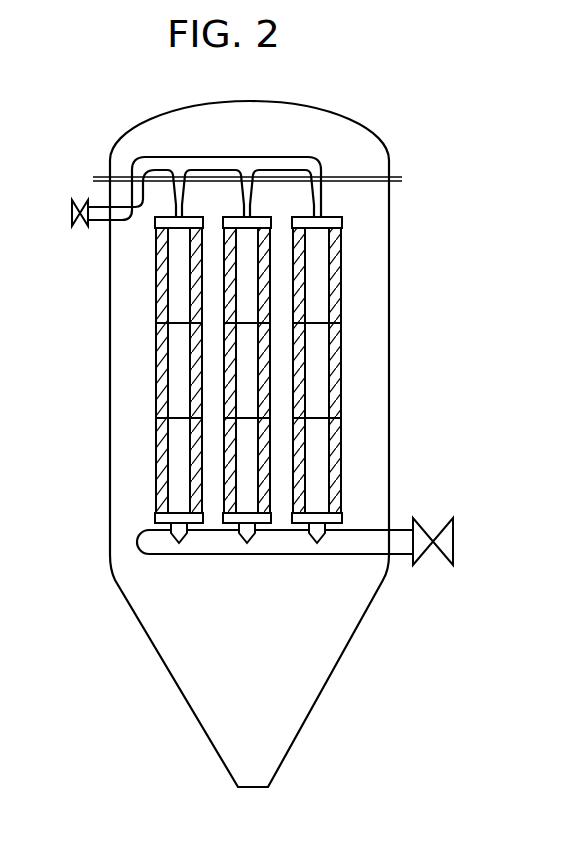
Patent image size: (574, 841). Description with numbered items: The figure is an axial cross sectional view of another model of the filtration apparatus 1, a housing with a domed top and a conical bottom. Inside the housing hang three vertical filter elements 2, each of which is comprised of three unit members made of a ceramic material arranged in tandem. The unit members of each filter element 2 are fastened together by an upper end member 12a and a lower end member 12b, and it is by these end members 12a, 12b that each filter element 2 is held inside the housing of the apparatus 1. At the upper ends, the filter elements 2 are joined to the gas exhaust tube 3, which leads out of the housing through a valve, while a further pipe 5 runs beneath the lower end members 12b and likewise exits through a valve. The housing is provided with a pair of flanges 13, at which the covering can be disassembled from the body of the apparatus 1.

The filtration apparatus 1 is at (390, 343).
The filter element 2 is at (340, 275).
The gas exhaust tube 3 is at (140, 168).
The part corresponding to FIG. 1 part 5 is at (332, 555).
The upper end member 12a is at (157, 223).
The lower end member 12b is at (157, 520).
The flange 13 is at (402, 178).